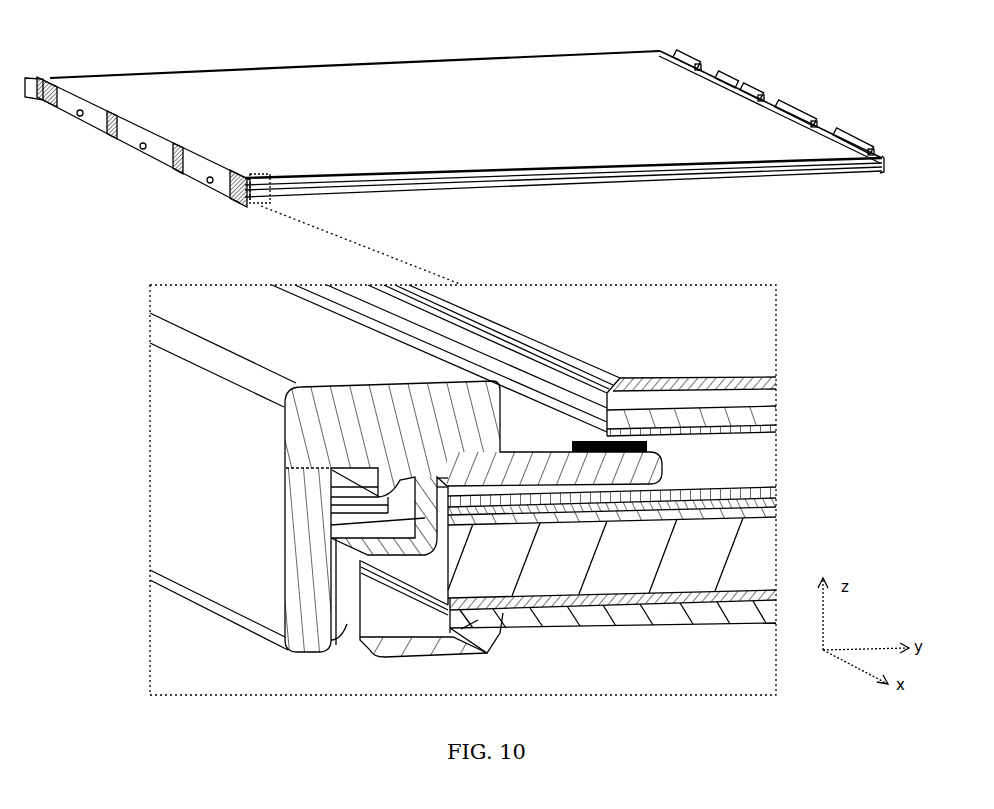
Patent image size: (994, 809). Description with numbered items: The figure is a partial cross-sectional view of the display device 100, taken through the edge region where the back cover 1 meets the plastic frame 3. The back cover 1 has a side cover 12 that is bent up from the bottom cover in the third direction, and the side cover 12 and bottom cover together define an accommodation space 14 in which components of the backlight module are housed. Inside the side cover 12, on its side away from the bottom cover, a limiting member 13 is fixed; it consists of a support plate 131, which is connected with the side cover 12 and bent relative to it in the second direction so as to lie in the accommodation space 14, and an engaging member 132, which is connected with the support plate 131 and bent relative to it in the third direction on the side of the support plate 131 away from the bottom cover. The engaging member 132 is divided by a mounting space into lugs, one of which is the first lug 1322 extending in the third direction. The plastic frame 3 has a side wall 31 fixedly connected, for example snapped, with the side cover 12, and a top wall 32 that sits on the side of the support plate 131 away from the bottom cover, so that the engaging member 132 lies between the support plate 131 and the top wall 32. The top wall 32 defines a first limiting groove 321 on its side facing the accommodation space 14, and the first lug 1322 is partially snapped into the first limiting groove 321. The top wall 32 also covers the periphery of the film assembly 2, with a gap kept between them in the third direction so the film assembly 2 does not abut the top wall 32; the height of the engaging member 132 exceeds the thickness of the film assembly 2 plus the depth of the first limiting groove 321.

The display device 100 is at (56, 40).
The back cover 1 is at (497, 669).
The side cover 12 is at (347, 623).
The accommodation space 14 is at (475, 625).
The film assembly 2 is at (777, 493).
The limiting member 13 is at (850, 303).
The support plate 131 is at (340, 548).
The engaging member 132 is at (340, 529).
The first lug 1322 is at (400, 466).
The plastic frame 3 is at (160, 600).
The side wall 31 is at (237, 600).
The top wall 32 is at (372, 400).
The first limiting groove 321 is at (434, 472).